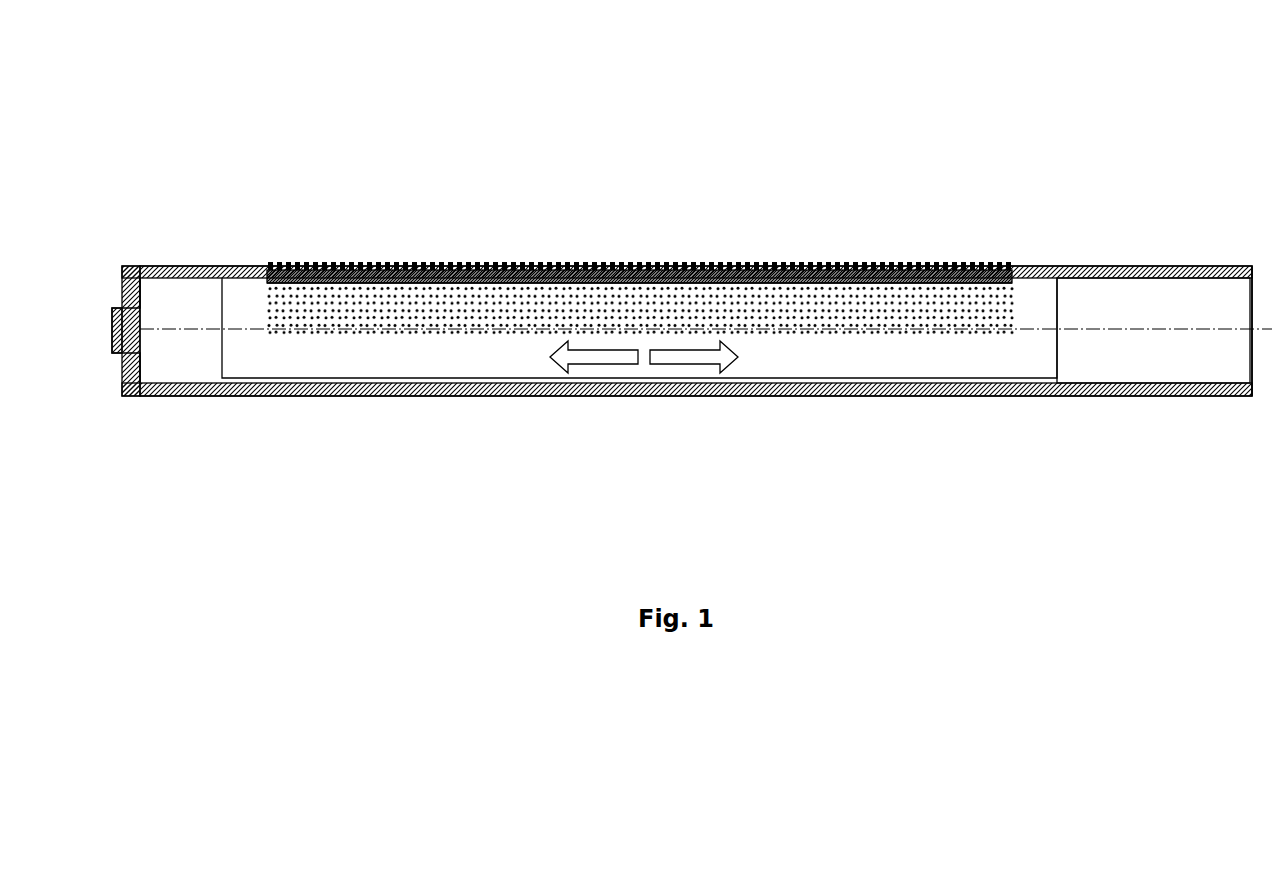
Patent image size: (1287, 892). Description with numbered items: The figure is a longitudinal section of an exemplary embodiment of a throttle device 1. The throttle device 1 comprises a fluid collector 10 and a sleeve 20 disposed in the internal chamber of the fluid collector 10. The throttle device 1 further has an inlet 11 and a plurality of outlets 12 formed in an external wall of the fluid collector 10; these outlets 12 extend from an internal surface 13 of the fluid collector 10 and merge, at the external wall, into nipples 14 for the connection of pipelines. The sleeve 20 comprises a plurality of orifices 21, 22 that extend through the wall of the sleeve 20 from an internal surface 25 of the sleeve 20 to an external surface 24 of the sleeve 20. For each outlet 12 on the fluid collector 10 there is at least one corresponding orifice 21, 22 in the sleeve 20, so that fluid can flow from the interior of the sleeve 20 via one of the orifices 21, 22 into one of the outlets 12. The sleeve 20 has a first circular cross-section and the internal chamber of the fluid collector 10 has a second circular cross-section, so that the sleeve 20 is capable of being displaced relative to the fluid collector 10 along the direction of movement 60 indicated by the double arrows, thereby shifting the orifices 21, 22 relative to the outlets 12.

The throttle device 1 is at (749, 118).
The fluid collector 10 is at (1125, 393).
The inlet 11 is at (1250, 312).
The outlets 12 is at (769, 243).
The internal surface of the fluid collector 13 is at (1152, 374).
The nipples 14 is at (585, 259).
The sleeve 20 is at (795, 360).
The orifice 21 is at (288, 308).
The orifice 22 is at (307, 310).
The external surface of the sleeve 24 is at (990, 360).
The internal surface of the sleeve 25 is at (1029, 289).
The direction of movement 60 is at (590, 355).